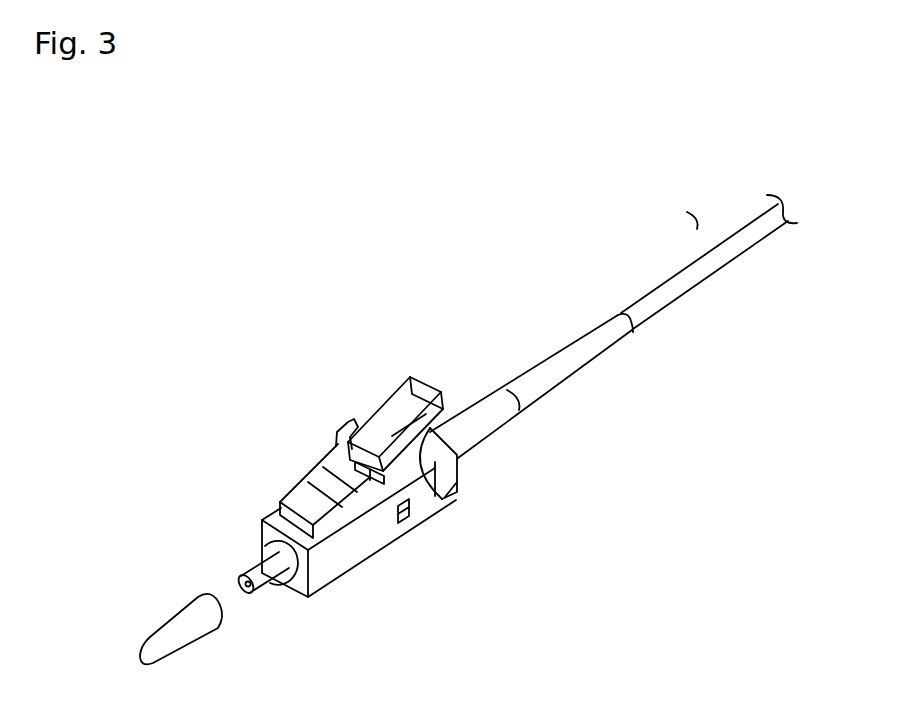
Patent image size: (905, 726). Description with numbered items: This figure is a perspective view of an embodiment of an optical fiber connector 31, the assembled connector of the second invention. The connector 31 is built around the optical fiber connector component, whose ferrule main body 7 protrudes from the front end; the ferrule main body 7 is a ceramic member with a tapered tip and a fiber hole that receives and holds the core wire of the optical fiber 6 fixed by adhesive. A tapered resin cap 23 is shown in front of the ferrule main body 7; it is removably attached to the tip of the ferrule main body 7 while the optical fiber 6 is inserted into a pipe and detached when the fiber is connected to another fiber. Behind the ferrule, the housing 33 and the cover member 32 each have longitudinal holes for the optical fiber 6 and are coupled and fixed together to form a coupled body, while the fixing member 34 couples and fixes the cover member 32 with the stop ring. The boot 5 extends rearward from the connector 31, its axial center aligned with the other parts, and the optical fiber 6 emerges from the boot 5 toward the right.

The boot 5 is at (492, 408).
The optical fiber 6 is at (672, 290).
The ferrule main body 7 is at (268, 573).
The cap 23 is at (182, 640).
The optical fiber connector 31 is at (532, 533).
The cover member 32 is at (443, 482).
The housing 33 is at (372, 540).
The fixing member 34 is at (452, 478).